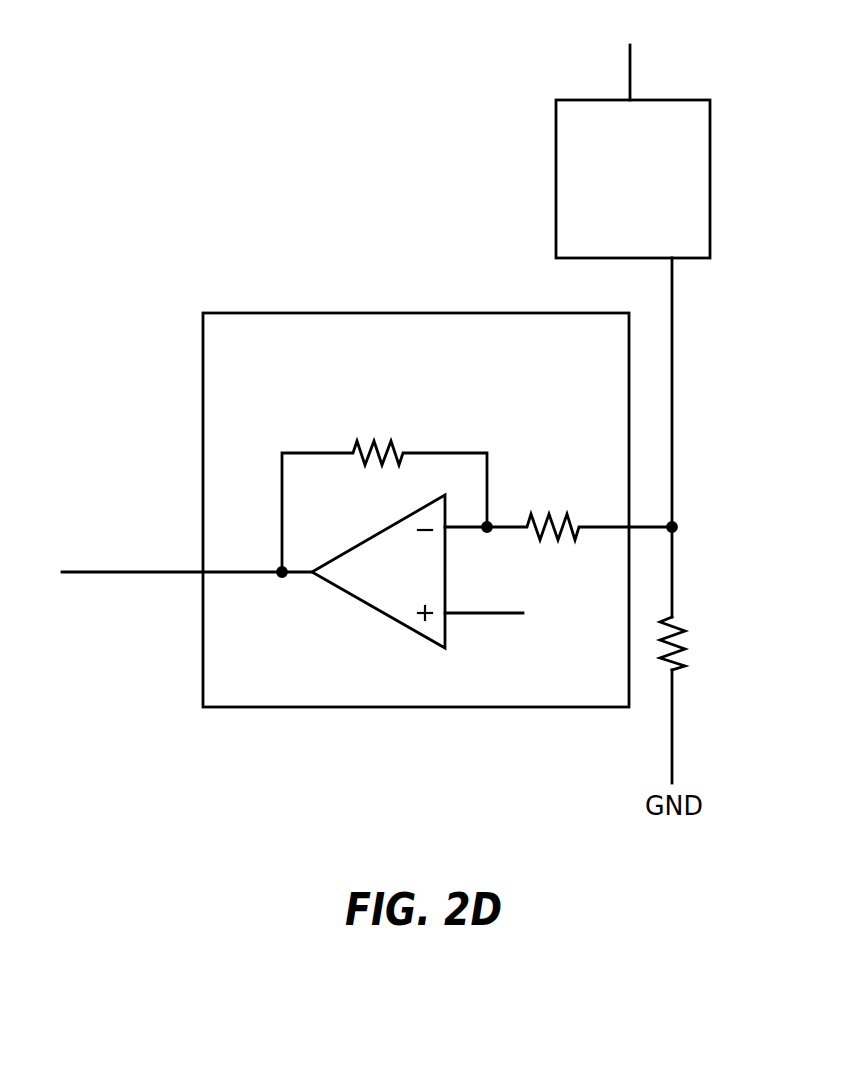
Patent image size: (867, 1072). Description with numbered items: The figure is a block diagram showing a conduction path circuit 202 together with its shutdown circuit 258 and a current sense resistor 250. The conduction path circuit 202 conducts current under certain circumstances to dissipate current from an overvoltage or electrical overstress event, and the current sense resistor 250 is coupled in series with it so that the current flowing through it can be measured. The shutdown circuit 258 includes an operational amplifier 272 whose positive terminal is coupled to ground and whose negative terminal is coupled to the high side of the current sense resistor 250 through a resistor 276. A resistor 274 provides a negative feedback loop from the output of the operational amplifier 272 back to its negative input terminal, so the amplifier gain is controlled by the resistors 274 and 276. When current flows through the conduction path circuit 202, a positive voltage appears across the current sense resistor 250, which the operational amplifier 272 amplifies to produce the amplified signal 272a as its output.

The conduction path circuit 202 is at (655, 187).
The current sense resistor 250 is at (716, 631).
The shutdown circuit 258 is at (613, 351).
The operational amplifier 272 is at (415, 587).
The amplified signal 272a is at (130, 570).
The resistor 274 is at (377, 463).
The resistor 276 is at (552, 518).